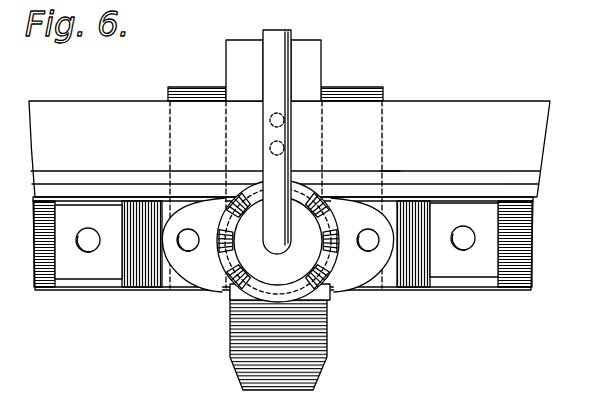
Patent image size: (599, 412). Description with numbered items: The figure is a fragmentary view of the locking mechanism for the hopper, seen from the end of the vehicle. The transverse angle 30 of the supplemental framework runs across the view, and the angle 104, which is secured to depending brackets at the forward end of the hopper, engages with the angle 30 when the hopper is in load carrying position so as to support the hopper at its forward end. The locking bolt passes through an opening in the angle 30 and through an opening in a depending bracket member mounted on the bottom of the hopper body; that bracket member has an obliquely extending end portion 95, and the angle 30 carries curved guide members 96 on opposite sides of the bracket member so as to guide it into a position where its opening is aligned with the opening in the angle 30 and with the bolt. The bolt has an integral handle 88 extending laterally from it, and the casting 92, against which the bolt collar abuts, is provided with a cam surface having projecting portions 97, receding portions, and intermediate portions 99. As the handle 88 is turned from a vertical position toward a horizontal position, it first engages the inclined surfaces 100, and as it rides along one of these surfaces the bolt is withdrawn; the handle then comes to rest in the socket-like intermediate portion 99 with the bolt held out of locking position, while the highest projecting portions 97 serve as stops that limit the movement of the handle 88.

The transverse member 30 is at (525, 231).
The handle 88 is at (289, 37).
The casting 92 is at (385, 194).
The obliquely extending end portion 95 is at (317, 334).
The curved guide members 96 is at (182, 88).
The projecting portions 97 is at (216, 236).
The intermediate portions 99 is at (218, 186).
The inclined surfaces 100 is at (250, 190).
The angle 104 is at (485, 104).